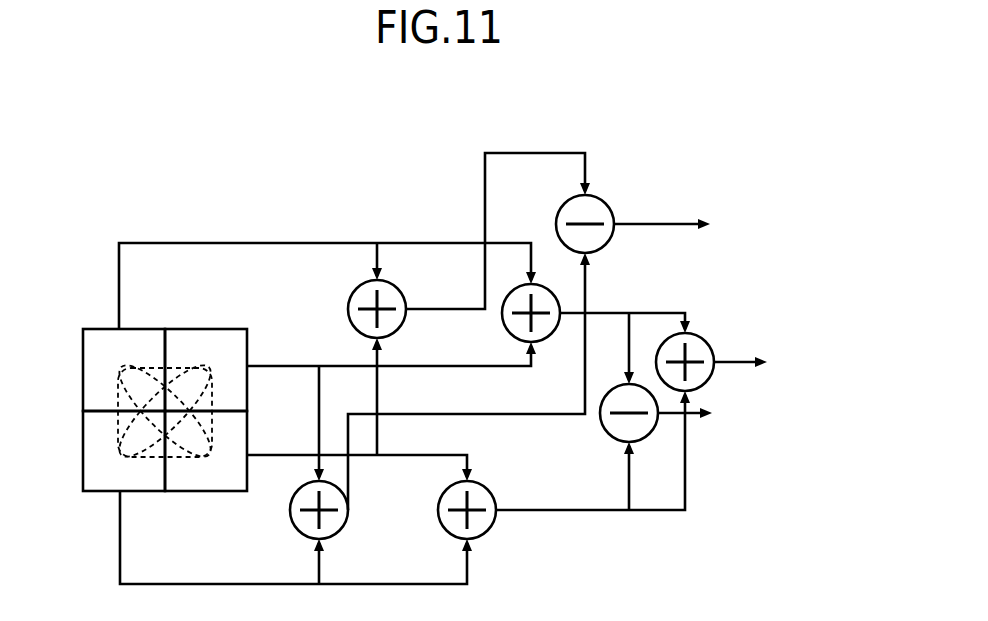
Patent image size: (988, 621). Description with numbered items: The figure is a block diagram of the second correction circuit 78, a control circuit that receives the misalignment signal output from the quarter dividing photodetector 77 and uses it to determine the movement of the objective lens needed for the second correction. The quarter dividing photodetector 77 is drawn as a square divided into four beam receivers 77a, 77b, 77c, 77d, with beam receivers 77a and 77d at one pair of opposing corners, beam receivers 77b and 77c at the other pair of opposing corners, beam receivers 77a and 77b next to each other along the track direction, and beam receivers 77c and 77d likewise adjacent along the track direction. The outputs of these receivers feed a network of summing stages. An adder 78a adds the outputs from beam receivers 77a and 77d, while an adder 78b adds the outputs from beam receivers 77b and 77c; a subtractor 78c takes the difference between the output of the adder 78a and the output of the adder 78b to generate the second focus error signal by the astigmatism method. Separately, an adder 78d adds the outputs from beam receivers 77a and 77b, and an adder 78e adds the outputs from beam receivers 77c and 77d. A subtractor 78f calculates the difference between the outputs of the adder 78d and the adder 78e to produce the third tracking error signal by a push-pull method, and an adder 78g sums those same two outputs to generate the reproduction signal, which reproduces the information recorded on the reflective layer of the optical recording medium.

The quarter dividing photodetector 77 is at (140, 407).
The beam receiver 77a is at (92, 329).
The beam receiver 77b is at (209, 329).
The beam receiver 77c is at (94, 491).
The beam receiver 77d is at (198, 491).
The second correction circuit 78 is at (397, 196).
The adder 78a is at (400, 298).
The adder 78b is at (349, 506).
The subtractor 78c is at (608, 208).
The adder 78d is at (552, 340).
The adder 78e is at (493, 498).
The subtractor 78f is at (644, 440).
The adder 78g is at (710, 348).